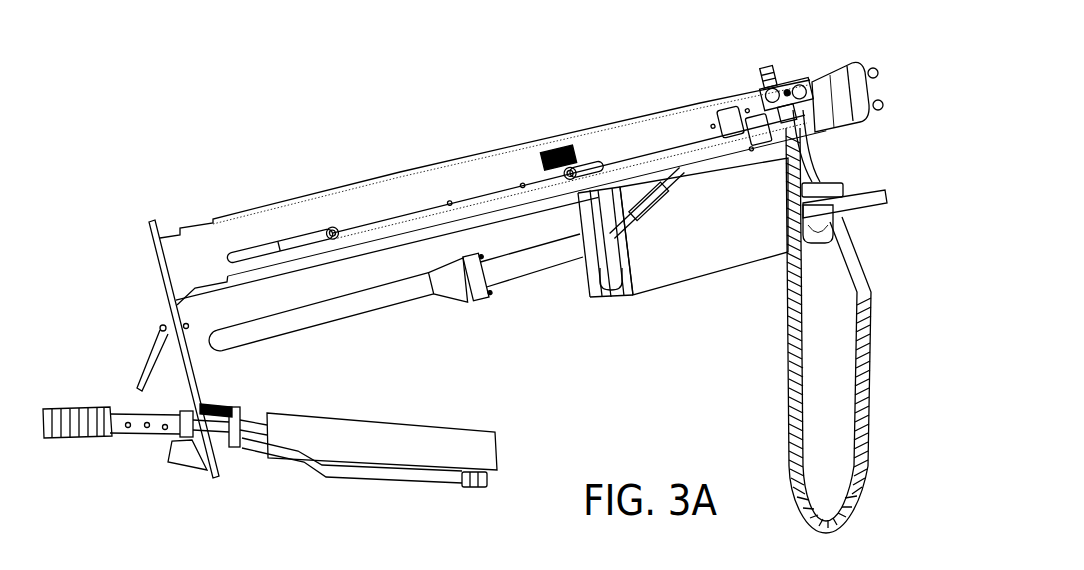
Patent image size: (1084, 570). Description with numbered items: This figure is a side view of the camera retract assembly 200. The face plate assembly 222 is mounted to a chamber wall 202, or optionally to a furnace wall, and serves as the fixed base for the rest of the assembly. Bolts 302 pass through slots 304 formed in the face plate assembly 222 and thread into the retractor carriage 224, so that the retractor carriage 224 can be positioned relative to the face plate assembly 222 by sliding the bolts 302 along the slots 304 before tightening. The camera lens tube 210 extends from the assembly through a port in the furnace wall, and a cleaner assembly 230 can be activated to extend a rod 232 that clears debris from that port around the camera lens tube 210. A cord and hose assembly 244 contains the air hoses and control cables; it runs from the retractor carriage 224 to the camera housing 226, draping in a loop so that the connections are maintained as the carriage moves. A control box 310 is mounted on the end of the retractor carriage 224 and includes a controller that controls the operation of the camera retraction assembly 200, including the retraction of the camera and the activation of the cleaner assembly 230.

The camera retract assembly 200 is at (216, 148).
The chamber wall 202 is at (156, 257).
The camera lens tube 210 is at (353, 323).
The face plate assembly 222 is at (318, 195).
The retractor carriage 224 is at (690, 103).
The camera housing 226 is at (670, 288).
The cleaner assembly 230 is at (380, 423).
The rod 232 is at (78, 438).
The cord and hose assembly 244 is at (872, 362).
The bolts 302 is at (337, 226).
The slots 304 is at (373, 230).
The control box 310 is at (853, 65).